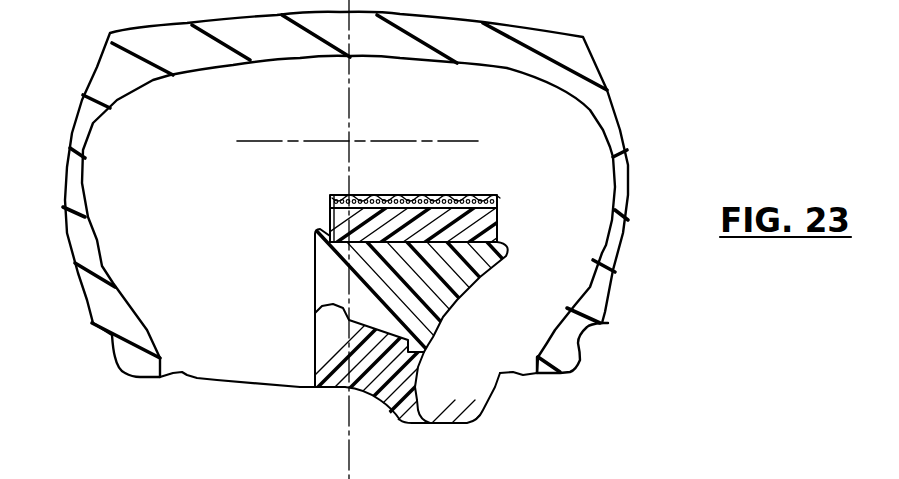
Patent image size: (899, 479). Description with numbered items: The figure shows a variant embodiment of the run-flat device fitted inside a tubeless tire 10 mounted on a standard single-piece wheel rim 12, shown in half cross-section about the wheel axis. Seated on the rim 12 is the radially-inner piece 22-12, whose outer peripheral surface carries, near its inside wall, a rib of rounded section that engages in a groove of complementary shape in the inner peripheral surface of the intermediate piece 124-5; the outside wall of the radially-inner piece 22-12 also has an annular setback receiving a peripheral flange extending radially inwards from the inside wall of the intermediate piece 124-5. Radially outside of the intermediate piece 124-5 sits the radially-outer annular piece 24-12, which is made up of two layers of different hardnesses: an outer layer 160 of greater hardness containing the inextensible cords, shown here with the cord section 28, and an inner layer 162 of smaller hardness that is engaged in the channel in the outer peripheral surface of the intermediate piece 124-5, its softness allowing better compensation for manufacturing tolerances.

The tire 10 is at (87, 113).
The rim 12 is at (238, 378).
The intermediate piece 124-5 is at (470, 293).
The radially-inner piece 22-12 is at (397, 390).
The radially-outer annular piece 24-12 is at (500, 208).
The outer layer 160 is at (338, 194).
The adhesive layer 28 is at (425, 194).
The inner layer 162 is at (328, 204).